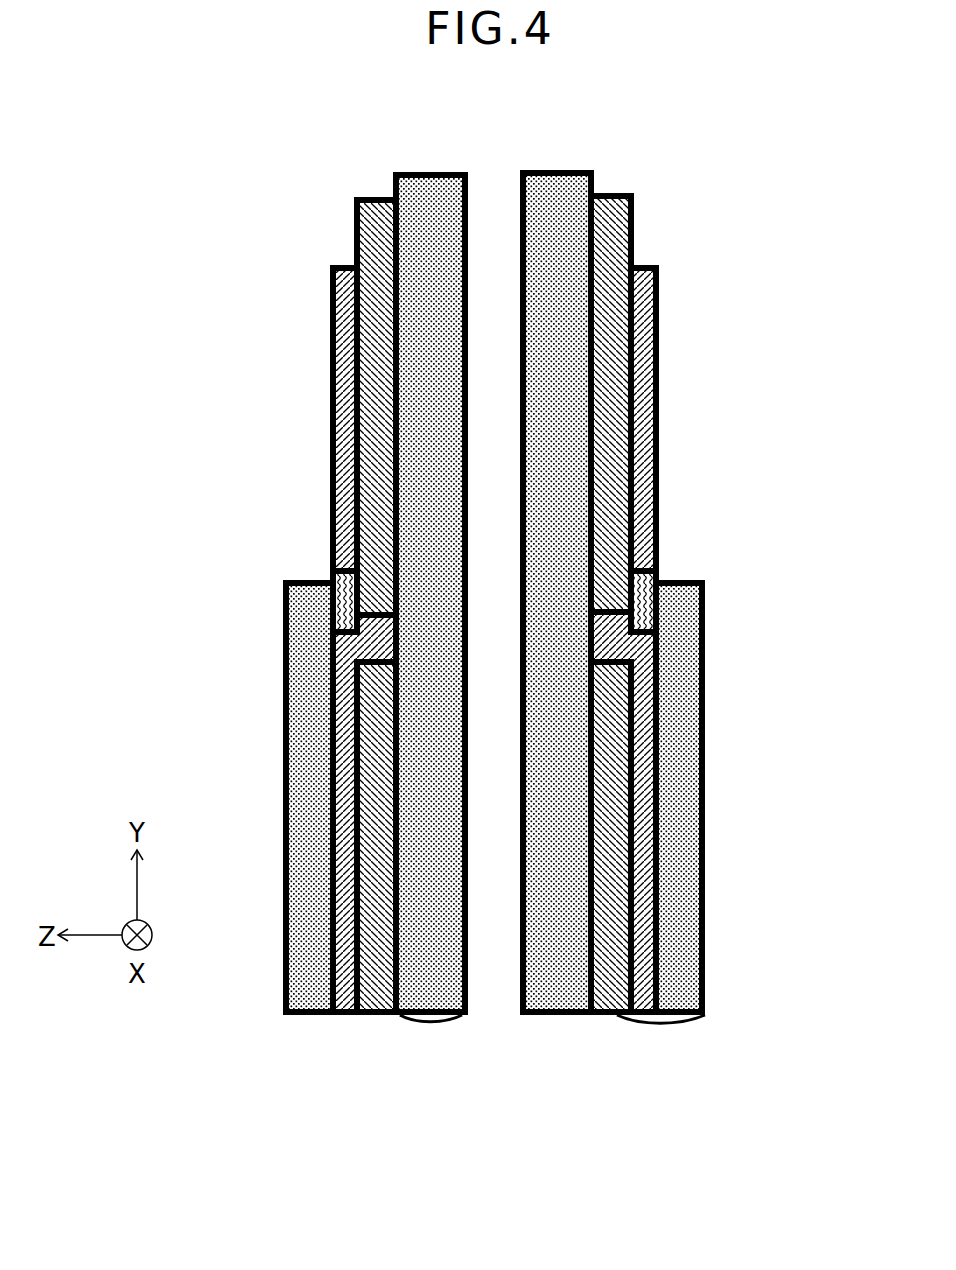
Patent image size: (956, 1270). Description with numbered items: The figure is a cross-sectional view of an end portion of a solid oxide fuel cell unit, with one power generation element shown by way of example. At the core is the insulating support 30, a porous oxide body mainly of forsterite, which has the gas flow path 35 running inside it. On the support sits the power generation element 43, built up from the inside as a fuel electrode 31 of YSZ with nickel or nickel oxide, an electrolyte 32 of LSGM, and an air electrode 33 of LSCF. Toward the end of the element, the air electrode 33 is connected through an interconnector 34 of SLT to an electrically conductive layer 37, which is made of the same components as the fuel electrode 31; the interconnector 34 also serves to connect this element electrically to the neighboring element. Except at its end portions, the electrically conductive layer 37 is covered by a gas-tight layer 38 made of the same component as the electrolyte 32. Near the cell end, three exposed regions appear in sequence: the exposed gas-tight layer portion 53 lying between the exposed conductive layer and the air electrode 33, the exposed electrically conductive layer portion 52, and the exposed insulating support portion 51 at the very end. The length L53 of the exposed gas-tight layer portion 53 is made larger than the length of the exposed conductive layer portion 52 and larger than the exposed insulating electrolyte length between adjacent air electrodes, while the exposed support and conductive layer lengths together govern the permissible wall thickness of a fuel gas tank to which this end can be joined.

The insulating support 30 is at (553, 190).
The fuel electrode 31 is at (612, 690).
The electrolyte 32 is at (648, 865).
The air electrode 33 is at (673, 757).
The interconnector 34 is at (660, 540).
The gas flow path 35 is at (492, 913).
The electrically conductive layer 37 is at (612, 217).
The gas-tight layer 38 is at (660, 302).
The power generation element 43 is at (263, 740).
The exposed insulating support portion 51 is at (383, 175).
The exposed electrically conductive layer portion 52 is at (338, 236).
The exposed gas-tight layer portion 53 is at (340, 445).
The length of exposed gas-tight layer portion L53 is at (333, 264).